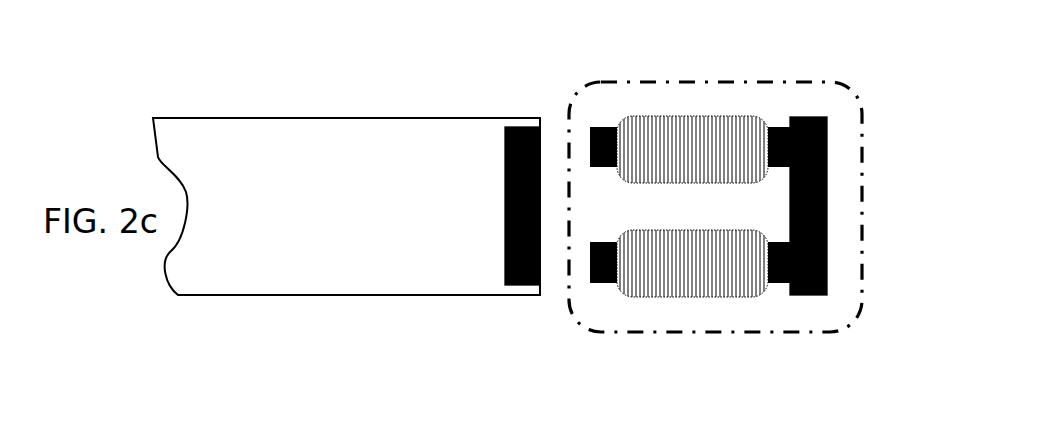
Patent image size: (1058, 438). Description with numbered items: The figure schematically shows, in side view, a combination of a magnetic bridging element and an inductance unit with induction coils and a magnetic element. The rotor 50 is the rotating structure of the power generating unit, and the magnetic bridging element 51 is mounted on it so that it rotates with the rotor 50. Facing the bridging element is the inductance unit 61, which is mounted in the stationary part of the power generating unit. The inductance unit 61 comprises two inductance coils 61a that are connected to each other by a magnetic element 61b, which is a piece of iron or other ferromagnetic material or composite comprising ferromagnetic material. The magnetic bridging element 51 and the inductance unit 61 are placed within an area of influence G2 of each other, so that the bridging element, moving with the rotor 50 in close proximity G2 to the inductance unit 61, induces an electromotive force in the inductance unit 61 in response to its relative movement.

The rotor 50 is at (345, 130).
The magnetic bridging element 51 is at (525, 130).
The inductance unit 61 is at (683, 100).
The inductance coils 61a is at (747, 137).
The magnetic element 61b is at (812, 178).
The area of influence G2 is at (550, 254).